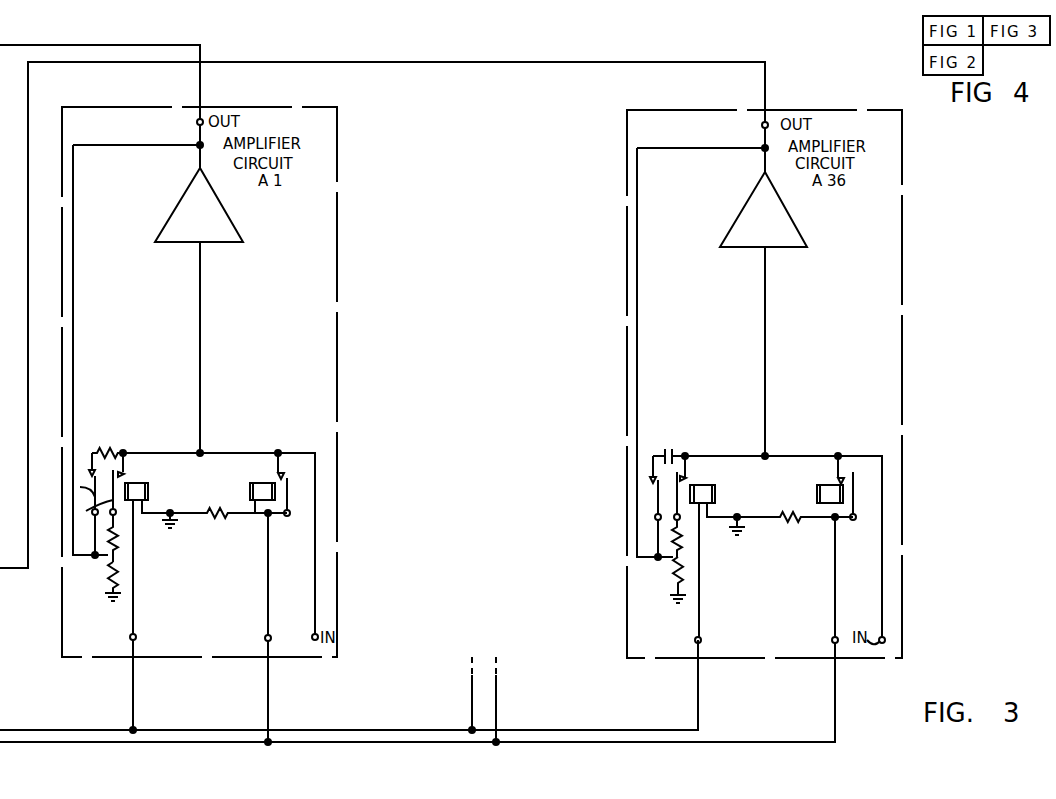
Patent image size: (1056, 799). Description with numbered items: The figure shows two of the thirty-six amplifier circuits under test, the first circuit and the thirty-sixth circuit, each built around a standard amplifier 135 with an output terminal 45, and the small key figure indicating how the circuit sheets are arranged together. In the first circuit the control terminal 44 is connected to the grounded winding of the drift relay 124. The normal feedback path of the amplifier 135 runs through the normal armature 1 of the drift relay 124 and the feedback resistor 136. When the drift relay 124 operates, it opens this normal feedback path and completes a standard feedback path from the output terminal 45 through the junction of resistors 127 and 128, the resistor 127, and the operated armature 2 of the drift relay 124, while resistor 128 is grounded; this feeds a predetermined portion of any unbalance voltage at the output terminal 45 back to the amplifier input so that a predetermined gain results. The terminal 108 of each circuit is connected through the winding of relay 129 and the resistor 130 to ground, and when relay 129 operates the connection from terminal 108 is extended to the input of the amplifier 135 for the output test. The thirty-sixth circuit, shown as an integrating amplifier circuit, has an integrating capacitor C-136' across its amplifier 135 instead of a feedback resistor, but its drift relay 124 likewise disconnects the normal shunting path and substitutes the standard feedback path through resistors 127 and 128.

The output terminal 45 is at (197, 122).
The standard amplifier 135 is at (172, 212).
The feedback resistor 136 is at (105, 447).
The integrating capacitor C-136' is at (671, 471).
The normal armature 1 is at (83, 489).
The operated armature 2 is at (93, 510).
The drift relay 124 is at (142, 483).
The relay 129 is at (250, 491).
The resistor 130 is at (219, 520).
The resistor 127 is at (118, 541).
The resistor 128 is at (105, 568).
The control terminal 44 is at (136, 636).
The terminal 108 is at (265, 637).